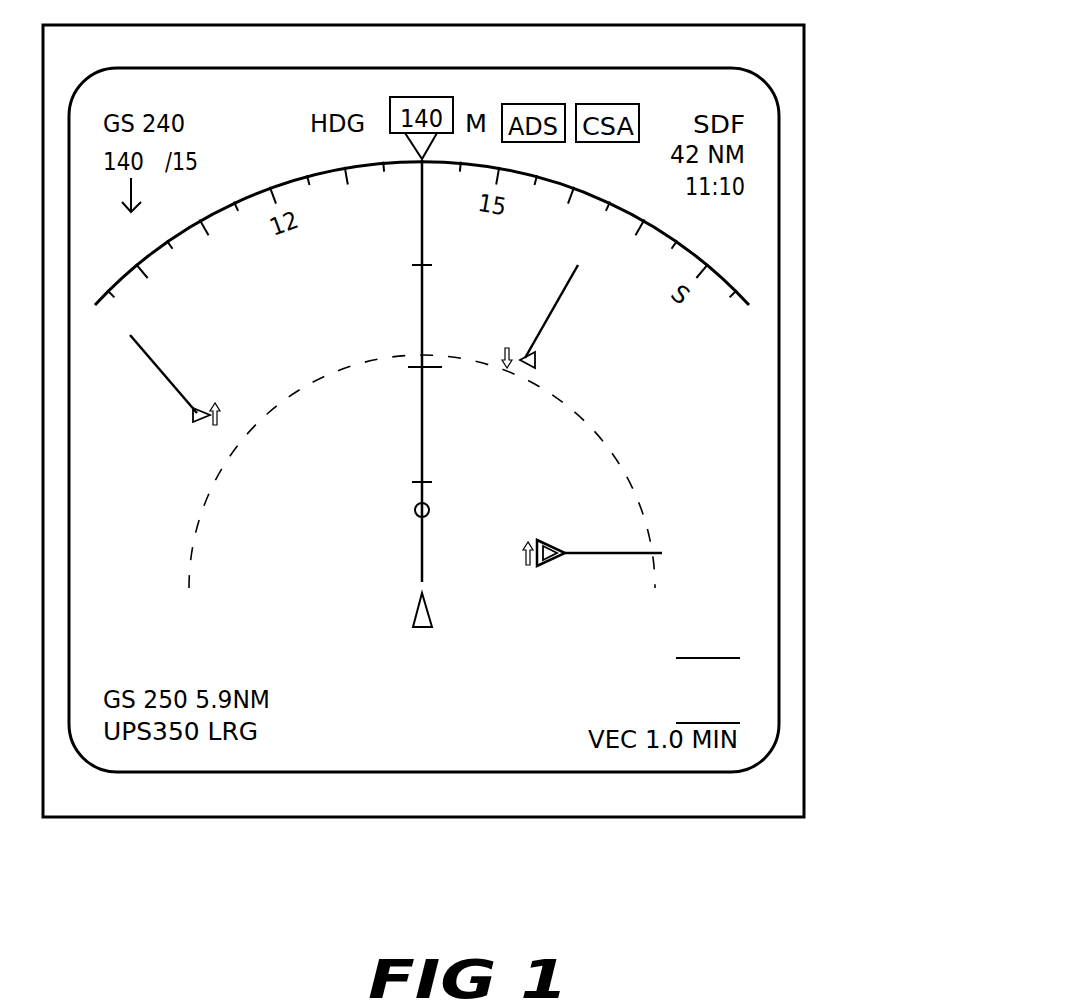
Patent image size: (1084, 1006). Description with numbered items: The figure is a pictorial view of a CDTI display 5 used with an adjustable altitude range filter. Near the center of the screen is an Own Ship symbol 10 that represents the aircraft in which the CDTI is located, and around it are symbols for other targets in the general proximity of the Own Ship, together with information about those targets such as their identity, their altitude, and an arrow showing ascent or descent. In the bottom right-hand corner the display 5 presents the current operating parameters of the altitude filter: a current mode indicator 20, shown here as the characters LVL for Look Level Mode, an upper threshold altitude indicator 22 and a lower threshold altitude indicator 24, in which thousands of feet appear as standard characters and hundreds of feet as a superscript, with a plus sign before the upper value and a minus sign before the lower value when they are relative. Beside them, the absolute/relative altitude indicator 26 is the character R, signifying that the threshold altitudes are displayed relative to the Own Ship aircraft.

The display 5 is at (818, 100).
The Own Ship symbol 10 is at (400, 630).
The current mode indicator 20 is at (626, 684).
The upper threshold altitude indicator 22 is at (683, 672).
The lower threshold altitude indicator 24 is at (685, 707).
The absolute/relative altitude indicator 26 is at (752, 686).